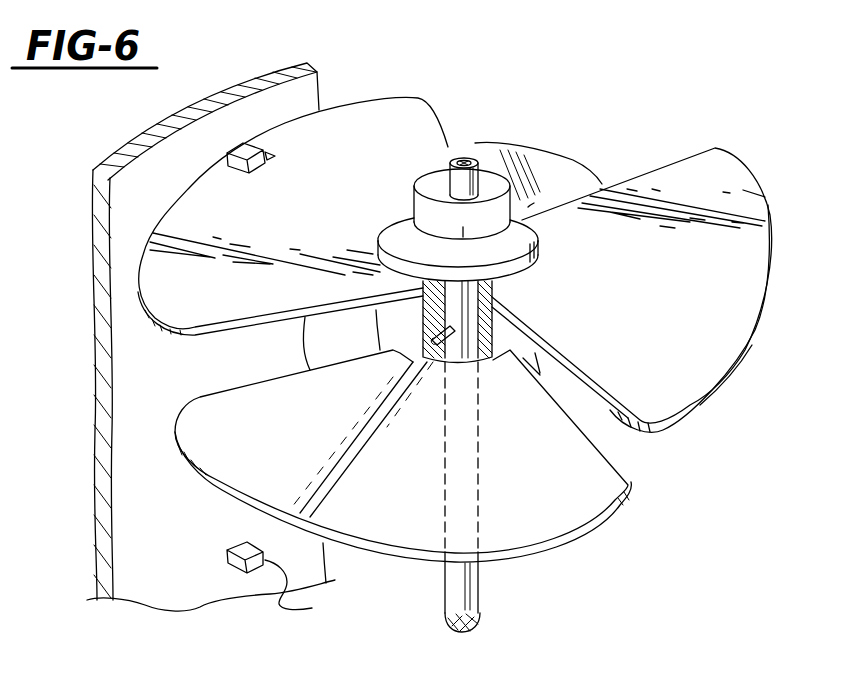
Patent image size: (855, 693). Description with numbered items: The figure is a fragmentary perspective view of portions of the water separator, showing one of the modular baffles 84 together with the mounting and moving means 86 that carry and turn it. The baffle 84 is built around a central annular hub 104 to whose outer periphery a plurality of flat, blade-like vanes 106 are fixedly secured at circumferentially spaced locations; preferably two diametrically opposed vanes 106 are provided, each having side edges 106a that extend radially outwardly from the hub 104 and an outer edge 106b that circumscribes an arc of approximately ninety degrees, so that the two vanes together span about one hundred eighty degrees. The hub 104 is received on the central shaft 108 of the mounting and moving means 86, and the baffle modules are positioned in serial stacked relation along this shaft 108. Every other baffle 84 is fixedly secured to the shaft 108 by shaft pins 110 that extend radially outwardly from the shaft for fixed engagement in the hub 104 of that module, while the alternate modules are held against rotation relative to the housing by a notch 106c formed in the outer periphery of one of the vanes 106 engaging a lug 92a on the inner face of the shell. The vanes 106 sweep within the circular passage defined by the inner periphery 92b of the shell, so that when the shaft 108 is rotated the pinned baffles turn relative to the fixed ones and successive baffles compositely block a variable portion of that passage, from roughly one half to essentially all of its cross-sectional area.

The baffle 84 is at (768, 195).
The mounting and moving means 86 is at (528, 207).
The lug 92a is at (245, 143).
The inner periphery of the shell 92b is at (185, 532).
The central annular hub 104 is at (540, 207).
The vane 106 is at (272, 300).
The side edge 106a is at (690, 156).
The outer edge 106b is at (733, 360).
The notch 106c is at (267, 155).
The central shaft 108 is at (475, 160).
The shaft pin 110 is at (456, 364).